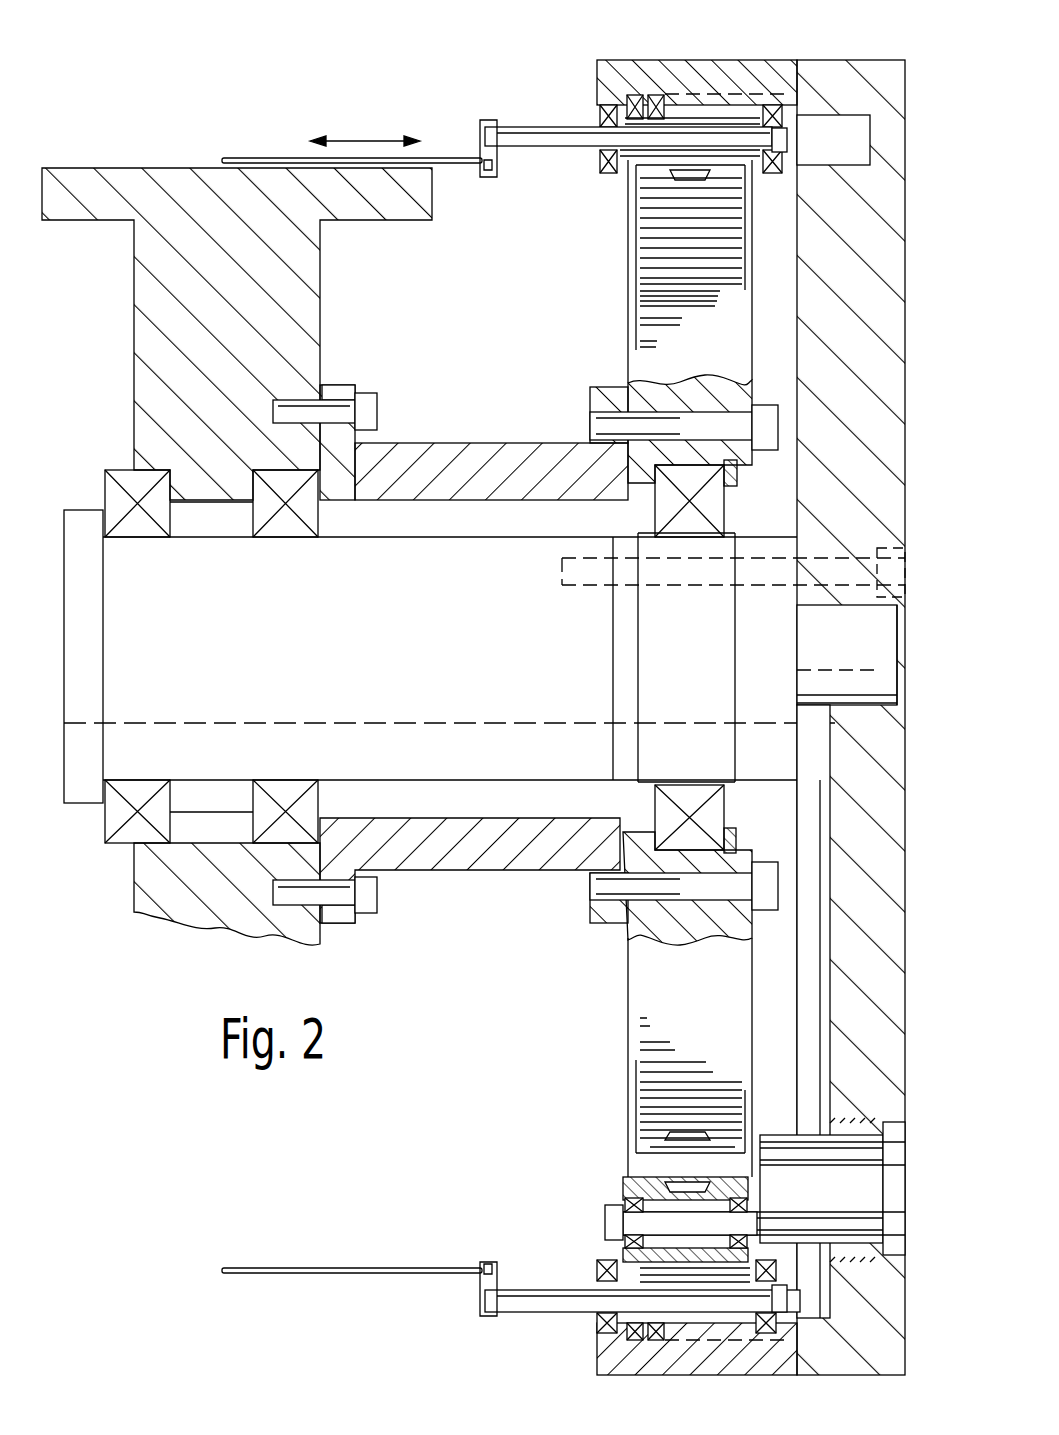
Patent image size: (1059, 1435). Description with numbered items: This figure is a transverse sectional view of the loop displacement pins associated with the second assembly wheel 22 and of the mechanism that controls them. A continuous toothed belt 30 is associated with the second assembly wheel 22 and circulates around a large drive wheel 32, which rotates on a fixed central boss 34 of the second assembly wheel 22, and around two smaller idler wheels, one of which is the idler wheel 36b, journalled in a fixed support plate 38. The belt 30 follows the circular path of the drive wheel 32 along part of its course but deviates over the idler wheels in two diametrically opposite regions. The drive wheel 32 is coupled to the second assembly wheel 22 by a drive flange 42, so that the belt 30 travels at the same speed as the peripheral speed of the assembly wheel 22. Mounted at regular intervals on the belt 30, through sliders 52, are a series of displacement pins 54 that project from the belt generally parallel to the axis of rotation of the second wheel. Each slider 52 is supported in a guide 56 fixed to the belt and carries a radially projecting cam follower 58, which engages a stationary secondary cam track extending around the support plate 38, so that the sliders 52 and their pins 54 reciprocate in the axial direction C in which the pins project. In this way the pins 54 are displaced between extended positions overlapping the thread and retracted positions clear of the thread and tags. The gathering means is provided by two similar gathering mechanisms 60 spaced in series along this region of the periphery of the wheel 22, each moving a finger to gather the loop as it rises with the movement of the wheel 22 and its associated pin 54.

The second assembly wheel 22 is at (148, 322).
The continuous toothed belt 30 is at (650, 290).
The drive wheel 32 is at (742, 393).
The fixed central boss 34 is at (425, 705).
The idler wheel 36b is at (635, 1185).
The fixed support plate 38 is at (850, 87).
The drive flange 42 is at (445, 455).
The slider 52 is at (548, 133).
The displacement pin 54 is at (258, 157).
The guide 56 is at (606, 174).
The cam follower 58 is at (620, 102).
The gathering mechanism 60 is at (680, 110).
The axial direction C is at (378, 141).